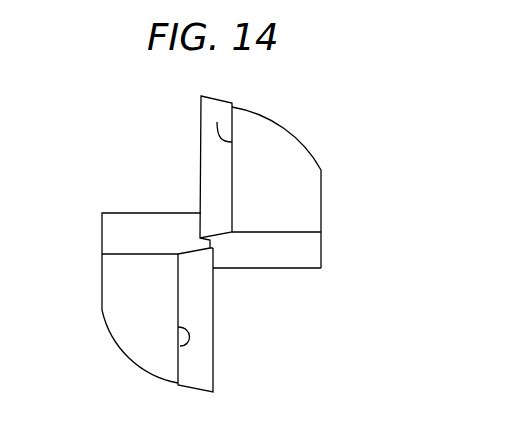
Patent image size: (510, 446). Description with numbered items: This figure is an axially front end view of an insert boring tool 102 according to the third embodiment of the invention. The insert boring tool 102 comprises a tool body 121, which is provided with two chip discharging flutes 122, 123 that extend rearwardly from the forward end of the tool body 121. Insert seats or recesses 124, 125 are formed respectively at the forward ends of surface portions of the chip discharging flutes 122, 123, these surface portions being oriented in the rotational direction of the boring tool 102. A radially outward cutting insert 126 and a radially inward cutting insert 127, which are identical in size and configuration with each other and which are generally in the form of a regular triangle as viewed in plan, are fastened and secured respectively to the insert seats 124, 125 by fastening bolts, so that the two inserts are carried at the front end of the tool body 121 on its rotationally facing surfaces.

The insert boring tool 102 is at (327, 202).
The tool body 121 is at (311, 150).
The chip discharging flute 122 is at (243, 282).
The chip discharging flute 123 is at (188, 206).
The insert seat 124 is at (180, 346).
The insert seat 125 is at (217, 122).
The radially outward cutting insert 126 is at (215, 358).
The radially inward cutting insert 127 is at (200, 146).